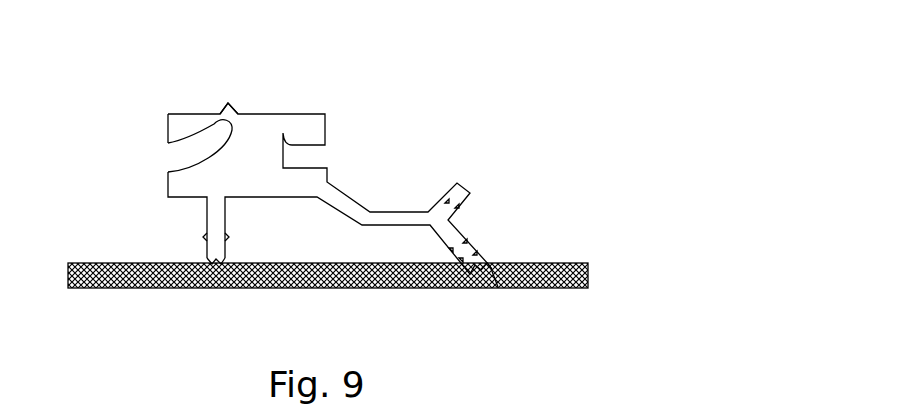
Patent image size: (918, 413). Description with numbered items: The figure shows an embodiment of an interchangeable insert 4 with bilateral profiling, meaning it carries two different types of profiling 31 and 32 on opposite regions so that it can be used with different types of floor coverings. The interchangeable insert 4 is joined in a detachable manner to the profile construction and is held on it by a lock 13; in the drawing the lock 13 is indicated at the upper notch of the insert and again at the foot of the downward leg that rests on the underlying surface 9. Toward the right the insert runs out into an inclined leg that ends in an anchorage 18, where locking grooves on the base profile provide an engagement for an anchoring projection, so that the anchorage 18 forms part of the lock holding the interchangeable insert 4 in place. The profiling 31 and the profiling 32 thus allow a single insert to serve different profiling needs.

The interchangeable insert 4 is at (136, 200).
The ground / substrate 9 is at (381, 302).
The lock 13 is at (231, 98).
The anchorage 18 is at (492, 270).
The profiling 31 is at (164, 157).
The profiling 32 is at (384, 150).